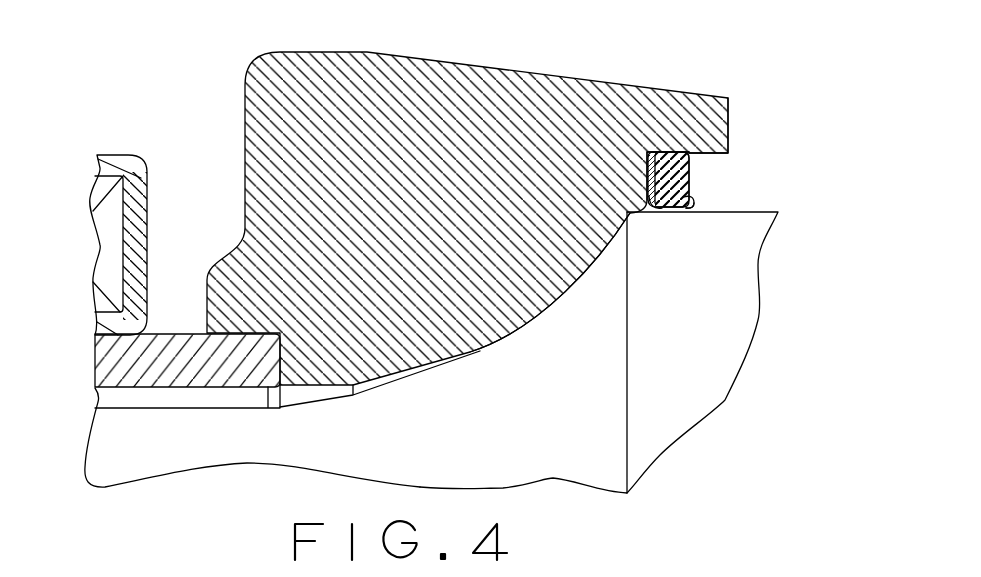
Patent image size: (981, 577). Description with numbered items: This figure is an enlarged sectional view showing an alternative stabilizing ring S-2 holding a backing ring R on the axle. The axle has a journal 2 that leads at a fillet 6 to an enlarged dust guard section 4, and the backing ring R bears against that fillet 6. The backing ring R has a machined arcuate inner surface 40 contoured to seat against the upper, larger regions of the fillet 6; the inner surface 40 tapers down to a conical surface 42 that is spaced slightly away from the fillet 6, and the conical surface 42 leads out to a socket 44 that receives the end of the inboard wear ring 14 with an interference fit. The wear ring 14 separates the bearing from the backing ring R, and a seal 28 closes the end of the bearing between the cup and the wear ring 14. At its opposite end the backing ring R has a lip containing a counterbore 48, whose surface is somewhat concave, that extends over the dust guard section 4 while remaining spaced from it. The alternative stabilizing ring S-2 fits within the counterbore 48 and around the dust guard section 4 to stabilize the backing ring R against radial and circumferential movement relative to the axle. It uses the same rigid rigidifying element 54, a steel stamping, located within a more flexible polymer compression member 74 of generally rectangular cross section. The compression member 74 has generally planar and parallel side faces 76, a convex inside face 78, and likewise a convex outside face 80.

The backing ring R is at (318, 34).
The journal 2 is at (172, 455).
The dust guard section 4 is at (686, 381).
The fillet 6 is at (558, 445).
The wear ring 14 is at (173, 333).
The seal 28 is at (115, 153).
The arcuate inner surface 40 is at (580, 268).
The conical surface 42 is at (403, 374).
The socket 44 is at (237, 337).
The counterbore 48 is at (720, 158).
The rigidifying element 54 is at (715, 232).
The compression member 74 is at (679, 152).
The side face 76 is at (648, 176).
The inside face 78 is at (670, 208).
The outside face 80 is at (672, 152).
The alternative stabilizing ring S-2 is at (706, 147).